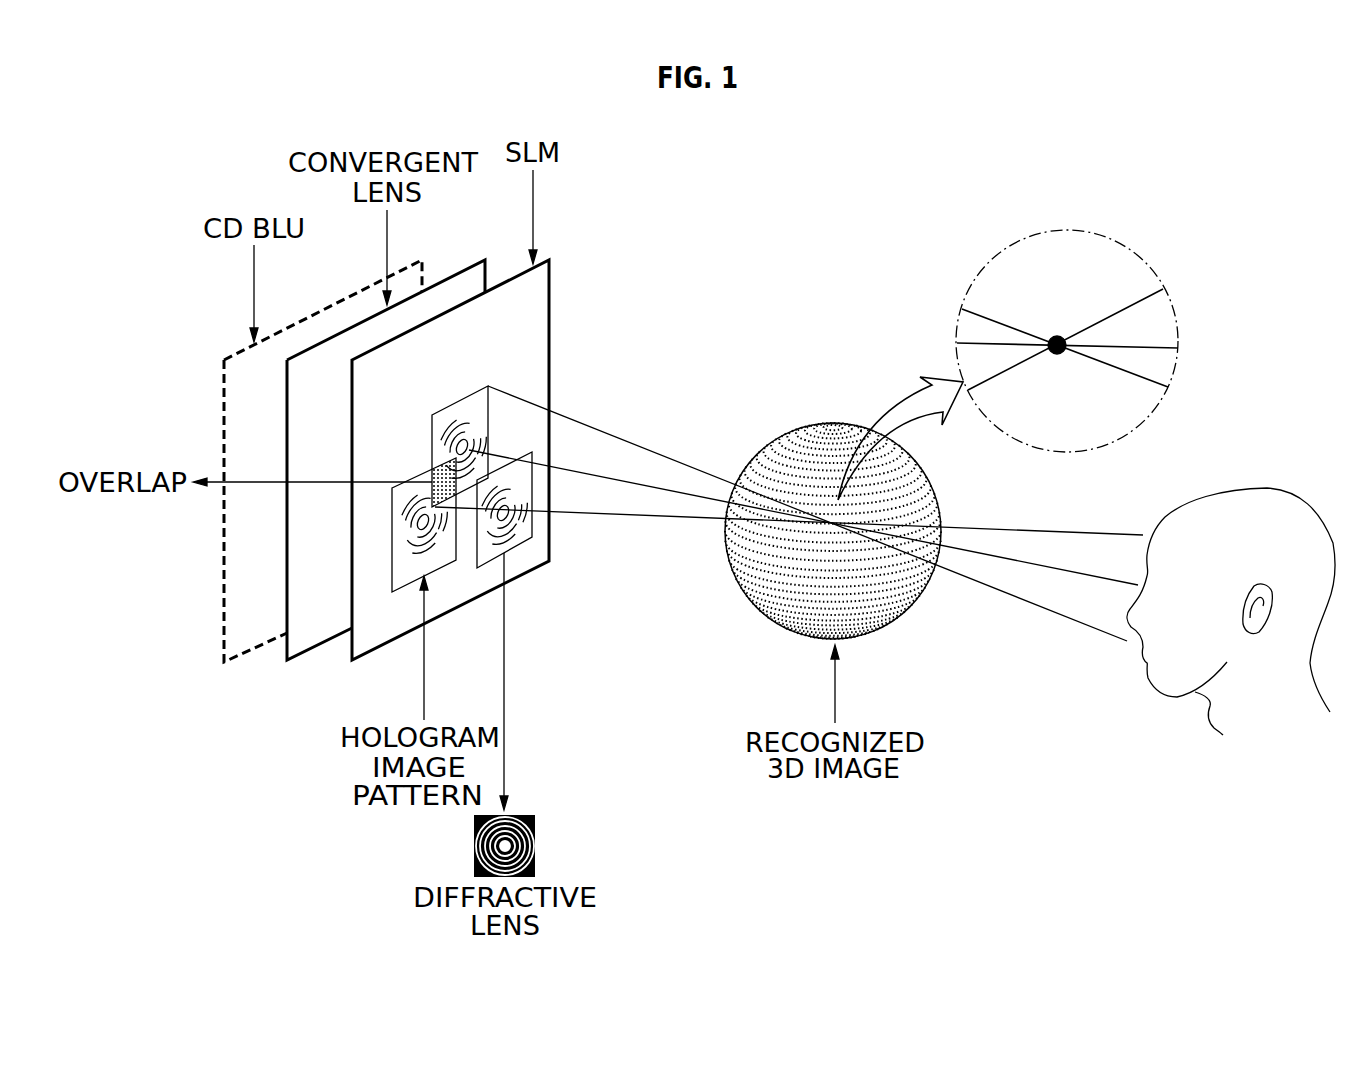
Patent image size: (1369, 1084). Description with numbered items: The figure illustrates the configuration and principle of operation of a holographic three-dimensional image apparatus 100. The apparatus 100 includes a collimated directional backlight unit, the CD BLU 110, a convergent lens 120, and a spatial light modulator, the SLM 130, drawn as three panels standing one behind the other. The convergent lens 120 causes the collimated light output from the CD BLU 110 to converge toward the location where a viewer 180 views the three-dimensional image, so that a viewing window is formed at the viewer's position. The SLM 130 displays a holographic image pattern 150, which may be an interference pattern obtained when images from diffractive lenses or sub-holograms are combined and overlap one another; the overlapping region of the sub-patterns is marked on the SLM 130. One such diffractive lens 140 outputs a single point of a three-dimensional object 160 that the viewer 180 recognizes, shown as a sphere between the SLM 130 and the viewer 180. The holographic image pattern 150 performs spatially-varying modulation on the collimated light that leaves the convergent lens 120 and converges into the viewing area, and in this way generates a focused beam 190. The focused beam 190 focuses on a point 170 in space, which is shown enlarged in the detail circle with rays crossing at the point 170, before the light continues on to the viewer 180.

The holographic 3D image apparatus 100 is at (733, 160).
The collimated directional backlight unit (CD BLU) 110 is at (224, 662).
The convergent lens 120 is at (287, 660).
The spatial light modulator (SLM) 130 is at (352, 660).
The diffractive lens 140 is at (521, 529).
The holographic image pattern 150 is at (443, 566).
The 3D object 160 is at (877, 638).
The point 170 is at (1056, 333).
The viewer 180 is at (1268, 487).
The focused beam 190 is at (650, 452).